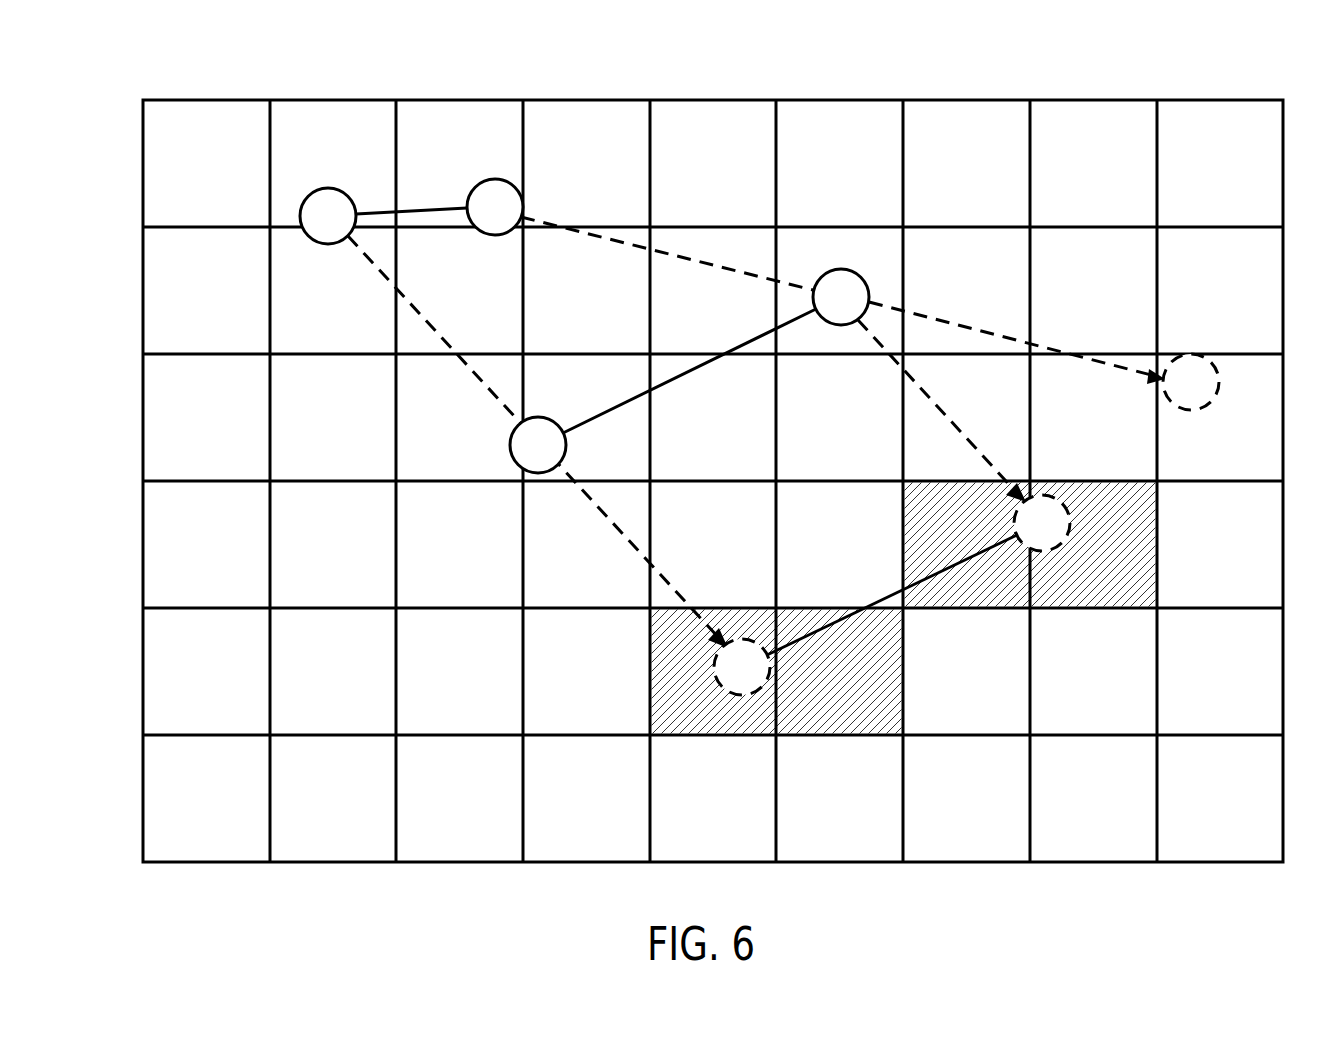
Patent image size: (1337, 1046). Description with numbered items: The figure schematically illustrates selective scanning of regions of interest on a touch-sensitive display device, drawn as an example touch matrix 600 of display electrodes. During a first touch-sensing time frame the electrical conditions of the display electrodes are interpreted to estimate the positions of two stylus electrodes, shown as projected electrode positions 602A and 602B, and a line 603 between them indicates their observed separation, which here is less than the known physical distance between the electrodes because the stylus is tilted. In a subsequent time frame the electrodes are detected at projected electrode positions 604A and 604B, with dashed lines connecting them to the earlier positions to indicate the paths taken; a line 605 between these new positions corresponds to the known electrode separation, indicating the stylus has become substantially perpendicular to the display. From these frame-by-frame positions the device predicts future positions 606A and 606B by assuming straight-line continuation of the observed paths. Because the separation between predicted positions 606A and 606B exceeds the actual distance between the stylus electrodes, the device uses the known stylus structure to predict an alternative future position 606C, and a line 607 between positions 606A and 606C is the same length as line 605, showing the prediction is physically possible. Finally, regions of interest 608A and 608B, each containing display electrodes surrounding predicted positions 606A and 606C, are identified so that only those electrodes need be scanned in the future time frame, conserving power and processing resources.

The touch matrix 600 is at (183, 78).
The projected electrode position 602A is at (303, 198).
The projected electrode position 602B is at (523, 209).
The line 603 is at (418, 208).
The projected electrode position 604A is at (512, 437).
The projected electrode position 604B is at (858, 273).
The line 605 is at (688, 370).
The predicted future stylus electrode position 606A is at (716, 680).
The predicted future stylus electrode position 606B is at (1190, 354).
The predicted future stylus electrode position 606C is at (1070, 540).
The line 607 is at (872, 598).
The region of interest 608A is at (800, 737).
The region of interest 608B is at (1055, 610).